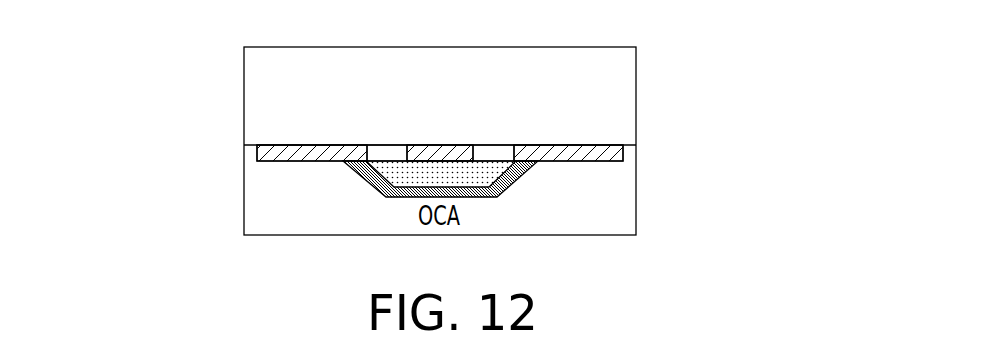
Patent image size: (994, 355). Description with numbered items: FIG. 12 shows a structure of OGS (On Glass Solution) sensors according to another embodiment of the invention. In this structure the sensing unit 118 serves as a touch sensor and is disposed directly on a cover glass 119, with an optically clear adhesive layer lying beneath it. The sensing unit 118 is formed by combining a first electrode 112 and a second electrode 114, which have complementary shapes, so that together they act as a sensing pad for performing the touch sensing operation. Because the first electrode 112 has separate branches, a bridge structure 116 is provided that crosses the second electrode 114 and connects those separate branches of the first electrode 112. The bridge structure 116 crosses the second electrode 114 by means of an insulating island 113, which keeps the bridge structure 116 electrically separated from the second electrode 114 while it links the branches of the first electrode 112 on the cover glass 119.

The sensing unit 118 is at (328, 133).
The first electrode 112 is at (258, 152).
The second electrode 114 is at (422, 147).
The bridge structure 116 is at (373, 176).
The insulating island 113 is at (488, 169).
The cover glass 119 is at (618, 102).